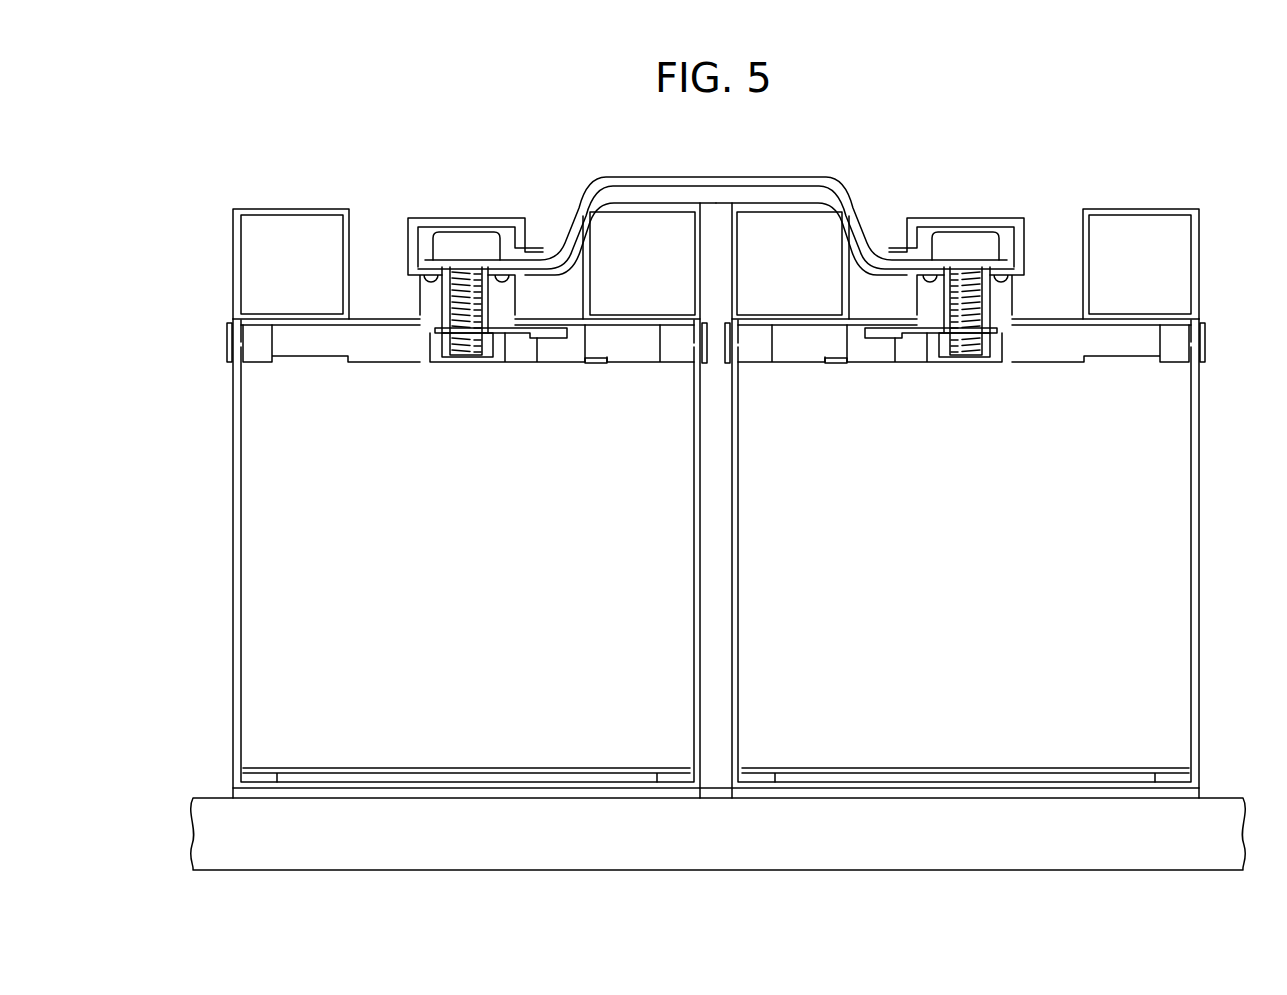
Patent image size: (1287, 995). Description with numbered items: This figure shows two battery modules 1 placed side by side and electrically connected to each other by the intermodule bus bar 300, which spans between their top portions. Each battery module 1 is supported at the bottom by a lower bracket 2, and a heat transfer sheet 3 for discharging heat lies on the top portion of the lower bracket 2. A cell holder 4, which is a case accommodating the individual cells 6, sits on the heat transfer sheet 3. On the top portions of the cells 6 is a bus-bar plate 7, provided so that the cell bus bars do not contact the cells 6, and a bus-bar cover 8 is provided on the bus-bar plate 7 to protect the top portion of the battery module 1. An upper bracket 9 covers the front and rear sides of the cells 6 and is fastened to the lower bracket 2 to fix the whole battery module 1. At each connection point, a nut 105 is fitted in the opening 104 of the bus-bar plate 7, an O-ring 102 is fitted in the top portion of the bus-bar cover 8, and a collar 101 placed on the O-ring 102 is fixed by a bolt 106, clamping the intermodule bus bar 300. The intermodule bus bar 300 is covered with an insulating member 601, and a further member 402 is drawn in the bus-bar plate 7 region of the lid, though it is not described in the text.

The battery module 1 is at (428, 158).
The lower bracket 2 is at (233, 788).
The heat transfer sheet 3 is at (292, 768).
The cell holder 4 is at (1200, 493).
The cell 6 is at (255, 553).
The bus-bar plate 7 is at (228, 348).
The bus-bar cover 8 is at (229, 318).
The upper bracket 9 is at (233, 245).
The collar 101 is at (497, 316).
The O-ring 102 is at (507, 282).
The opening 104 is at (948, 342).
The nut 105 is at (446, 357).
The bolt 106 is at (478, 232).
The intermodule bus bar 300 is at (752, 177).
The insulating plate 402 is at (600, 364).
The insulating member 601 is at (1042, 856).